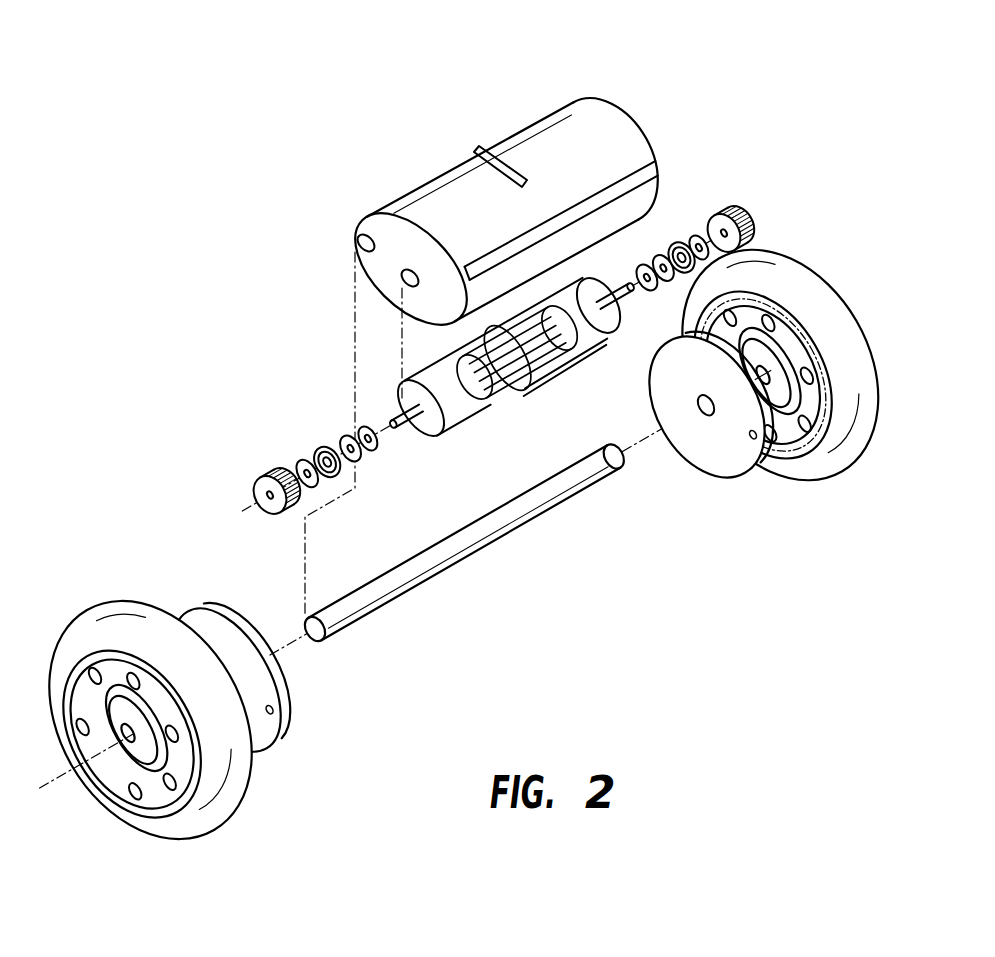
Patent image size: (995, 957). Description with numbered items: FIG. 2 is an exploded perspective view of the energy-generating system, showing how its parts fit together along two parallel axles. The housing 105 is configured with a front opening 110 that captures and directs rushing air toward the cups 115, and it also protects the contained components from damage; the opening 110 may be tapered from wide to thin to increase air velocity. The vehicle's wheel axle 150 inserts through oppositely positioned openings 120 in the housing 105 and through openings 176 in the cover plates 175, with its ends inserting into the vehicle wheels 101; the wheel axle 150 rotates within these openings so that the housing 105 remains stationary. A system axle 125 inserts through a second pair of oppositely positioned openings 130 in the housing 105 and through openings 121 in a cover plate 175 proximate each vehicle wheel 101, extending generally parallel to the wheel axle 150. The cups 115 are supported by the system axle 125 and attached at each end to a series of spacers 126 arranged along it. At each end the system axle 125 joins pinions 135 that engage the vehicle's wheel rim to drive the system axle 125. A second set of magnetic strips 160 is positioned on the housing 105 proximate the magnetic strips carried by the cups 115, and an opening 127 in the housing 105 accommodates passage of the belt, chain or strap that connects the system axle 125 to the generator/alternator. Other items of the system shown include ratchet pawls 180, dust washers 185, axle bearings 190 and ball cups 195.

The vehicle wheel 101 is at (822, 270).
The housing 105 is at (617, 128).
The front opening 110 is at (642, 193).
The cups 115 is at (470, 410).
The openings 120 is at (358, 242).
The openings 121 is at (266, 737).
The system axle 125 is at (397, 444).
The spacers 126 is at (644, 252).
The opening 127 is at (483, 156).
The openings 130 is at (406, 280).
The pinions 135 is at (758, 214).
The wheel axle 150 is at (460, 567).
The second set of magnetic strips 160 is at (572, 362).
The cover plates 175 is at (735, 462).
The openings 176 is at (700, 412).
The ratchet pawls 180 is at (375, 453).
The dust washers 185 is at (343, 437).
The axle bearings 190 is at (312, 448).
The ball cups 195 is at (295, 464).